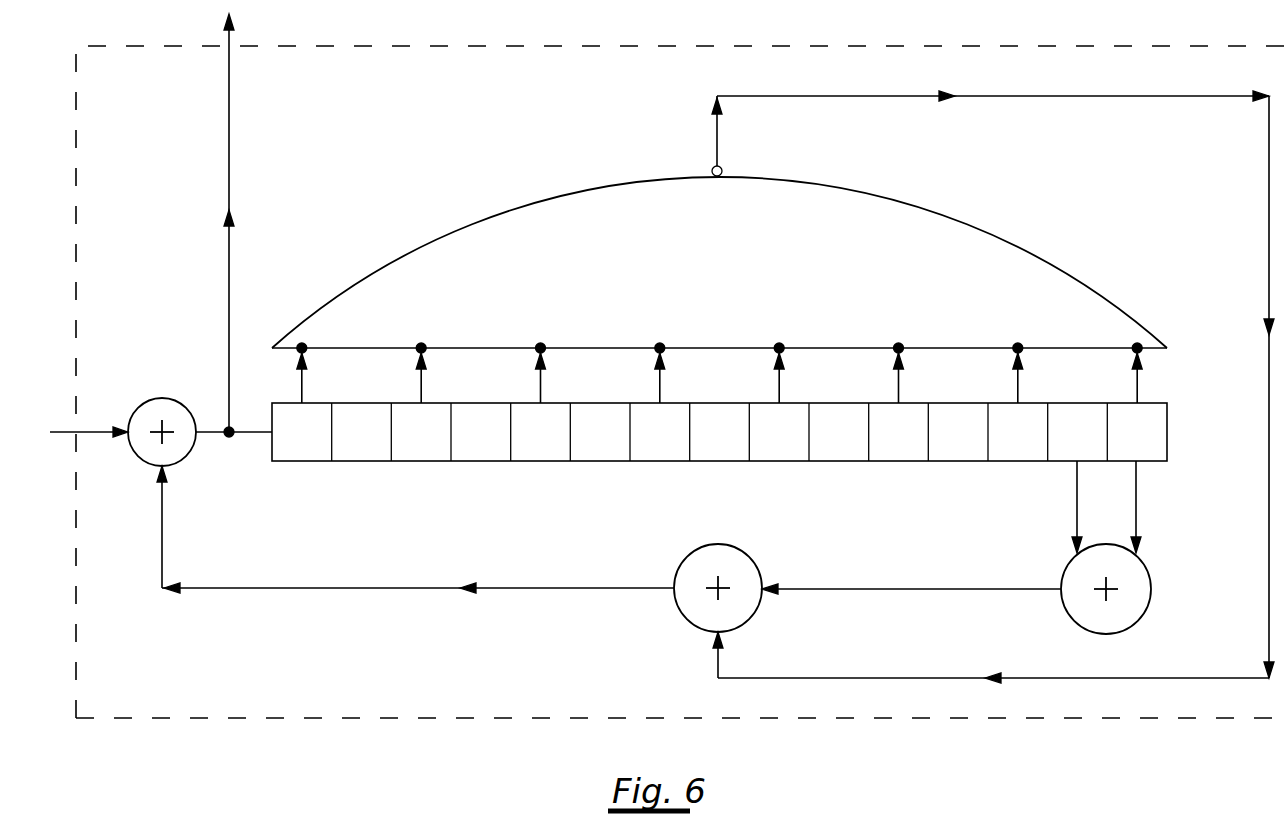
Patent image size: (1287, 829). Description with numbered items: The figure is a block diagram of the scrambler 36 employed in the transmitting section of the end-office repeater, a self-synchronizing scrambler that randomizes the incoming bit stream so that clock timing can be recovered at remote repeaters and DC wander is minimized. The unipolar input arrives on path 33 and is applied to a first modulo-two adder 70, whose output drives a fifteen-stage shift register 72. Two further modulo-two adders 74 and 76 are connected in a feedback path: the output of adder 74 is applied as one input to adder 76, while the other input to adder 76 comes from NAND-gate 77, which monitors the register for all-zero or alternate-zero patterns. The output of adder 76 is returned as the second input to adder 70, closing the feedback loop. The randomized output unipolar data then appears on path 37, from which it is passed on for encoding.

The path 33 is at (58, 432).
The scrambler 36 is at (236, 672).
The path 37 is at (230, 132).
The modulo-2 adder 70 is at (163, 398).
The 15-stage shift register 72 is at (373, 462).
The modulo-2 adder 74 is at (1151, 592).
The modulo-2 adder 76 is at (745, 549).
The NAND-gate 77 is at (447, 232).